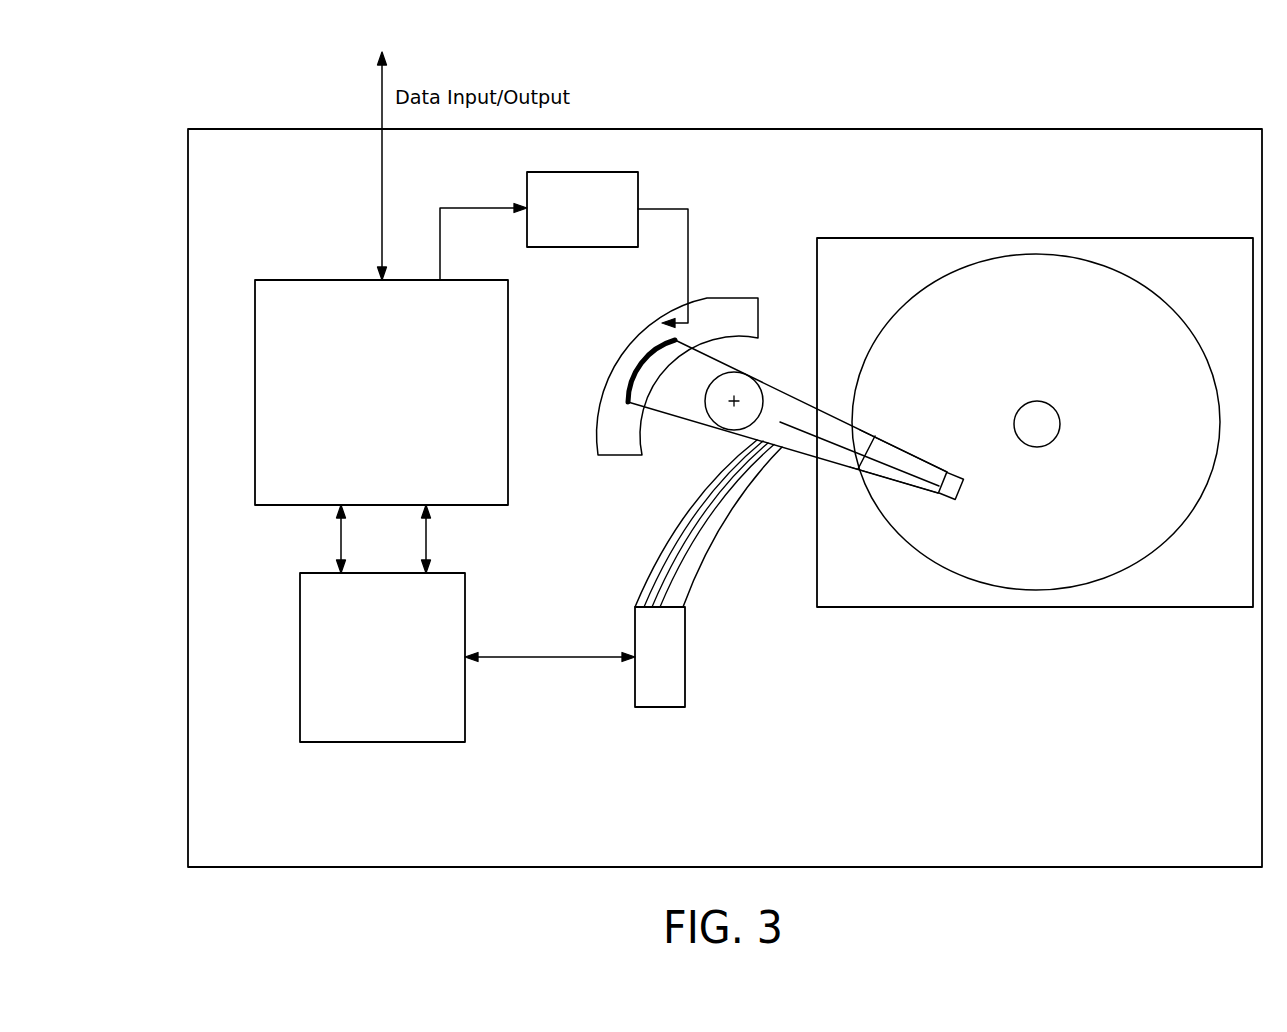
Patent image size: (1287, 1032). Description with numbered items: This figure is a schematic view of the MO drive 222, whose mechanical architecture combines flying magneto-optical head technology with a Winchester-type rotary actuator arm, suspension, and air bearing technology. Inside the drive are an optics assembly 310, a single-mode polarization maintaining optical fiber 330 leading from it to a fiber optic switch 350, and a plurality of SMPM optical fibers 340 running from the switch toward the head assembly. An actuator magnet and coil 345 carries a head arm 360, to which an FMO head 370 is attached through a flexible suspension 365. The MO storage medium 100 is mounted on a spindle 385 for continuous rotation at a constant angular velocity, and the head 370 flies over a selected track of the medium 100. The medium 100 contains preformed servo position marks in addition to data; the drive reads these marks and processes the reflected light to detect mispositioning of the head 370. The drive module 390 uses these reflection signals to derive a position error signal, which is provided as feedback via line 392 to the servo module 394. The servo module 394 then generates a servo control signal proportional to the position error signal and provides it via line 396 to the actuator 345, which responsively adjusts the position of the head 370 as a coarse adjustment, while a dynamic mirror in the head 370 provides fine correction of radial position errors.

The MO drive 222 is at (1150, 100).
The MO storage medium 100 is at (1152, 325).
The optics assembly 310 is at (400, 742).
The single-mode polarization maintaining optical fiber 330 is at (532, 658).
The plurality of SMPM optical fibers 340 is at (685, 587).
The actuator magnet and coil 345 is at (704, 302).
The fiber optic switch 350 is at (686, 646).
The head arm 360 is at (793, 410).
The suspension 365 is at (917, 450).
The FMO head 370 is at (964, 482).
The spindle 385 is at (1062, 426).
The drive module 390 is at (508, 336).
The line 392 is at (447, 207).
The servo module 394 is at (638, 174).
The line 396 is at (688, 233).